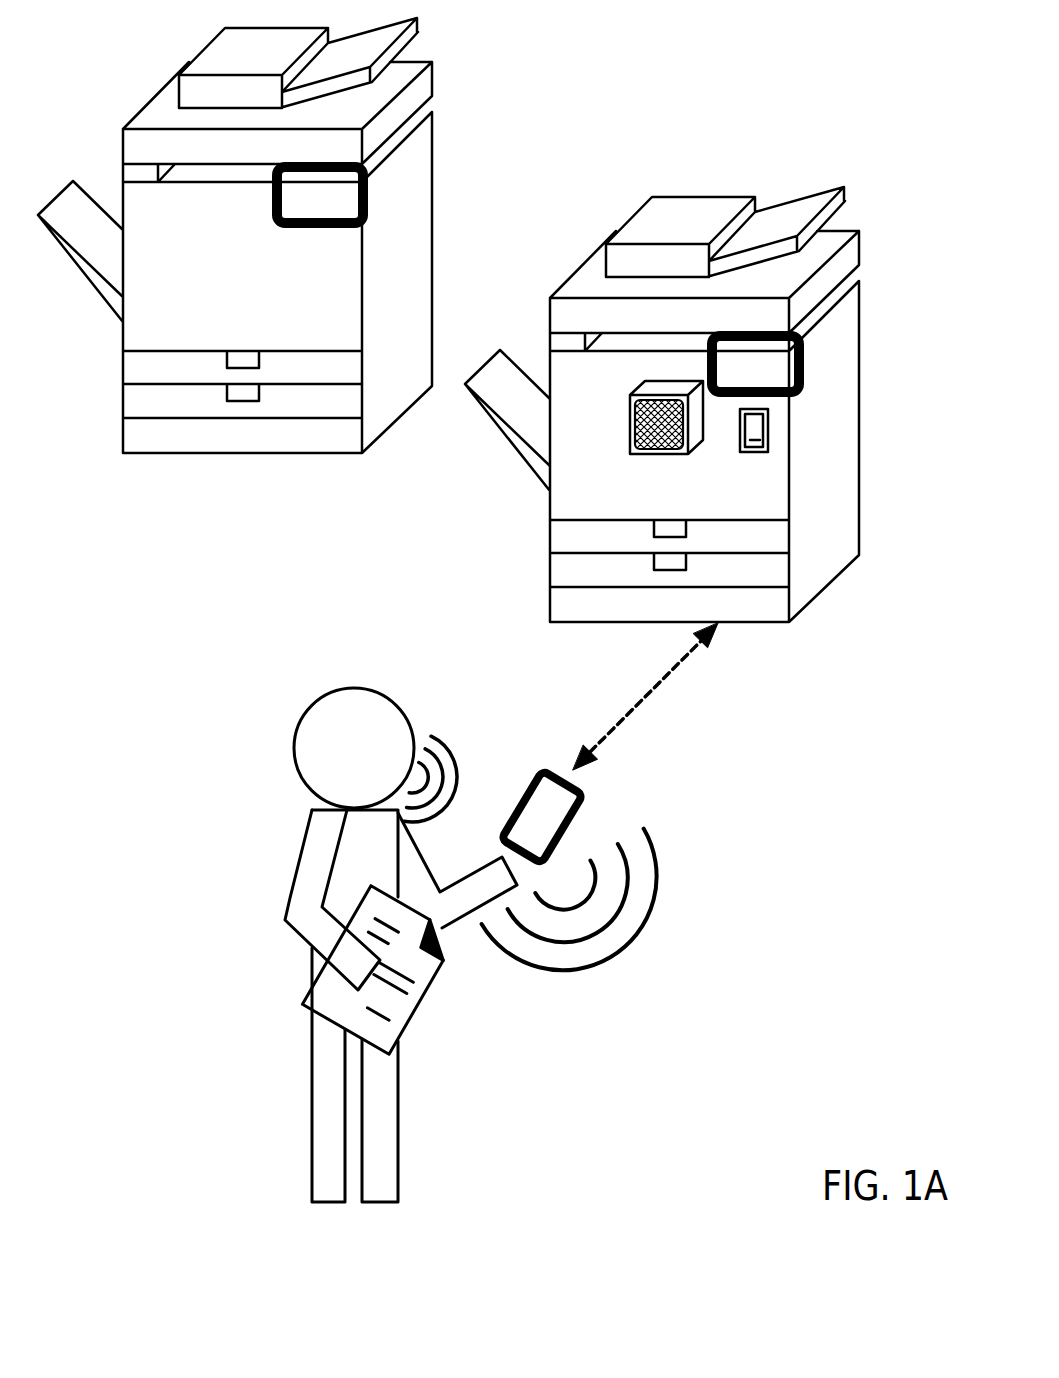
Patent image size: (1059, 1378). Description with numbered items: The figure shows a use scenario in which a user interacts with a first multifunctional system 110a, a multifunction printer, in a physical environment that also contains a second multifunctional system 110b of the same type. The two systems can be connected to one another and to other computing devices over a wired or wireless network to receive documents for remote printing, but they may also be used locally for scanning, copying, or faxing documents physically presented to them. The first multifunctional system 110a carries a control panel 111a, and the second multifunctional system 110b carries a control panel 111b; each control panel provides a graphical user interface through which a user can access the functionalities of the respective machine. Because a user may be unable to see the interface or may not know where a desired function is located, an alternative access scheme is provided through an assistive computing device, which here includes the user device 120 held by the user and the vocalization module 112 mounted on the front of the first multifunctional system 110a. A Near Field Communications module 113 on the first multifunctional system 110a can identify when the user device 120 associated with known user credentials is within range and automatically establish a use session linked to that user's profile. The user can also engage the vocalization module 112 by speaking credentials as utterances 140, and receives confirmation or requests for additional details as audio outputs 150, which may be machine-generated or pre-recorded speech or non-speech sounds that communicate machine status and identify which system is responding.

The first multifunctional system 110a is at (677, 215).
The second multifunctional system 110b is at (410, 155).
The control panel 111a is at (803, 375).
The control panel 111b is at (368, 200).
The vocalization module 112 is at (630, 453).
The Near Field Communications module 113 is at (768, 434).
The user device 120 is at (590, 785).
The utterances 140 is at (467, 735).
The audio outputs 150 is at (652, 913).